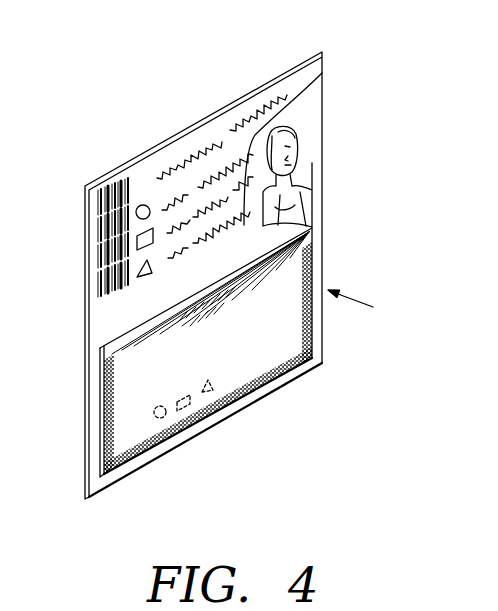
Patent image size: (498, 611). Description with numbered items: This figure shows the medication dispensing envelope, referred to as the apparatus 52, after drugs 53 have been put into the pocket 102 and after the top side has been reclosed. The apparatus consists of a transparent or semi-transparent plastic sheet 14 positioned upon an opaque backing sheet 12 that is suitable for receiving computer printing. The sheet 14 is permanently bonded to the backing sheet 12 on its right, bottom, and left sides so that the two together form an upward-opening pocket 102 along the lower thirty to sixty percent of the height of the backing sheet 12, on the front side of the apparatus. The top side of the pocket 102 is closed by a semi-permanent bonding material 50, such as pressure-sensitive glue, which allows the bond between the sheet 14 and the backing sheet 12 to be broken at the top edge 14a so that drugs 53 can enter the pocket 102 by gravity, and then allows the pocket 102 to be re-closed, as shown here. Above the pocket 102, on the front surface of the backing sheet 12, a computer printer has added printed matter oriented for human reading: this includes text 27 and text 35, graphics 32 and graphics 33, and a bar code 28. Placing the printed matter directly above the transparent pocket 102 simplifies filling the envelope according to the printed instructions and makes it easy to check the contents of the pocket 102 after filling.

The backing sheet 12 is at (312, 127).
The transparent sheet 14 is at (137, 390).
The top edge 14a is at (133, 338).
The printed text 27 is at (322, 73).
The bar code 28 is at (97, 210).
The graphics 32 is at (145, 205).
The graphics 33 is at (293, 175).
The printed text 35 is at (200, 150).
The semi-permanent bonding material 50 is at (266, 260).
The apparatus 52 is at (368, 306).
The drugs 53 is at (210, 383).
The pocket 102 is at (250, 347).